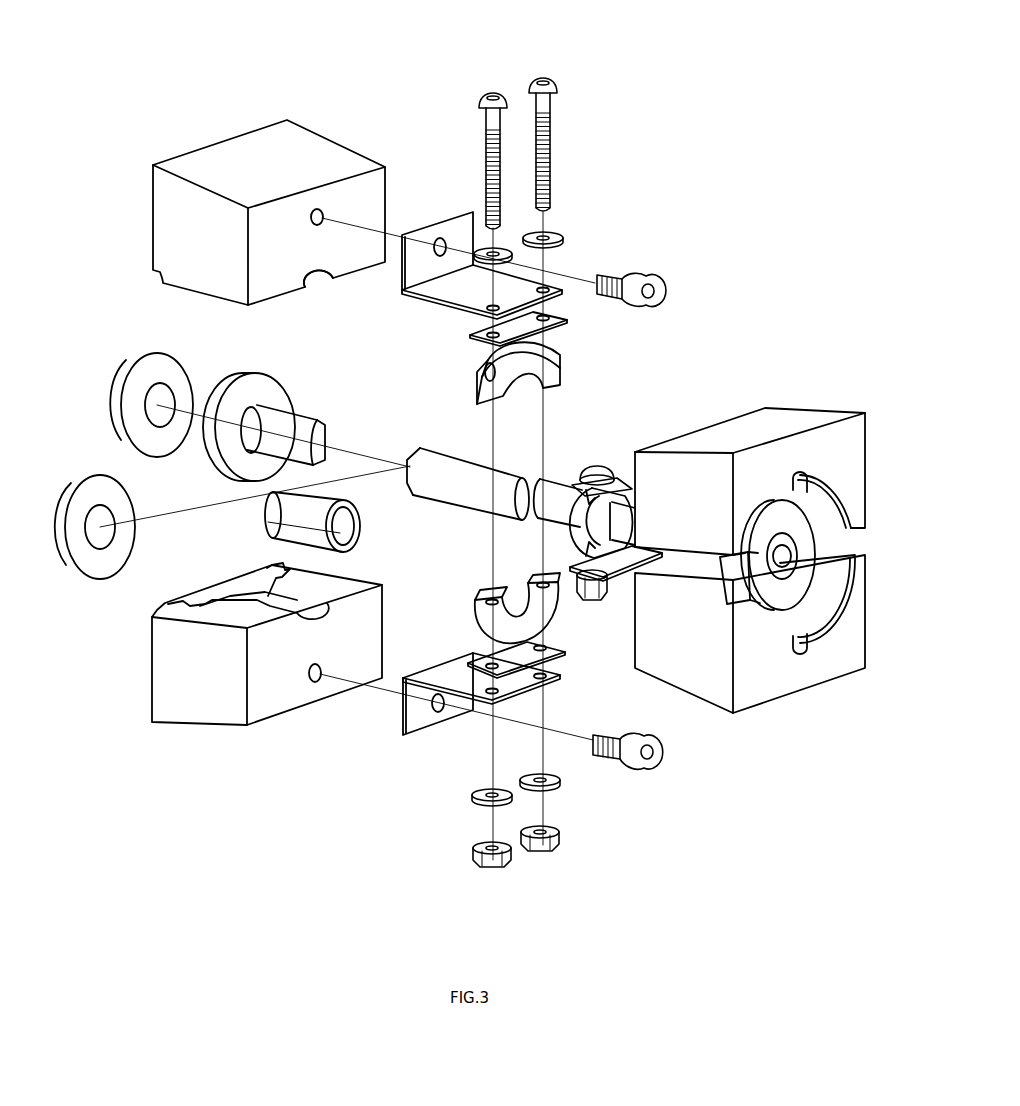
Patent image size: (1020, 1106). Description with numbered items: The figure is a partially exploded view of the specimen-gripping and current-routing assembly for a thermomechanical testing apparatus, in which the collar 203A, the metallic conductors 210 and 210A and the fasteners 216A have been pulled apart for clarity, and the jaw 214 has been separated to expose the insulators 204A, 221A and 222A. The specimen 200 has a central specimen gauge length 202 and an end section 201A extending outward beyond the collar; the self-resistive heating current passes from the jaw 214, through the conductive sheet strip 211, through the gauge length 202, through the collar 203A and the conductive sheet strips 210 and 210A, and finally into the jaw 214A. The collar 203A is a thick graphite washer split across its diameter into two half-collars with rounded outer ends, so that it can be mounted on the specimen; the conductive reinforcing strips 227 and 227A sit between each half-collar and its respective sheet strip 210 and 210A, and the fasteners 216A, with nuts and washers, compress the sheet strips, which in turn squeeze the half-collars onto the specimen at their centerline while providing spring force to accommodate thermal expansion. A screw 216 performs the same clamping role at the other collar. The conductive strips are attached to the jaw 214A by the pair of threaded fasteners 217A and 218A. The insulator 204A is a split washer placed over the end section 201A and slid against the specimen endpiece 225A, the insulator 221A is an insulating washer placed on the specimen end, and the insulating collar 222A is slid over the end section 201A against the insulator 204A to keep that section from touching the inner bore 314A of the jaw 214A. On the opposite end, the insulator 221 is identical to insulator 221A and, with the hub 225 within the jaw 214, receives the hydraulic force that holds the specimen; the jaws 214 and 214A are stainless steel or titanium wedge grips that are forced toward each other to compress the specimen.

The specimen 200 is at (425, 423).
The end section 201A is at (466, 489).
The specimen gauge length 202 is at (572, 513).
The collar 203A is at (537, 492).
The insulator 204A is at (85, 509).
The conductive sheet strip 210 is at (444, 729).
The conductive sheet strip 210A is at (455, 283).
The conductive sheet strip 211 is at (616, 618).
The jaw 214 is at (750, 577).
The jaw 214A is at (251, 440).
The screw 216 is at (618, 499).
The fasteners 216A is at (546, 121).
The threaded fastener 217A is at (663, 269).
The threaded fastener 218A is at (646, 782).
The insulator 221 is at (819, 626).
The insulator 221A is at (143, 391).
The insulating collar 222A is at (271, 527).
The hub 225 is at (744, 618).
The specimen endpiece 225A is at (260, 403).
The conductive reinforcing strip 227 is at (555, 681).
The conductive reinforcing strip 227A is at (586, 329).
The inner bore 314A is at (211, 443).